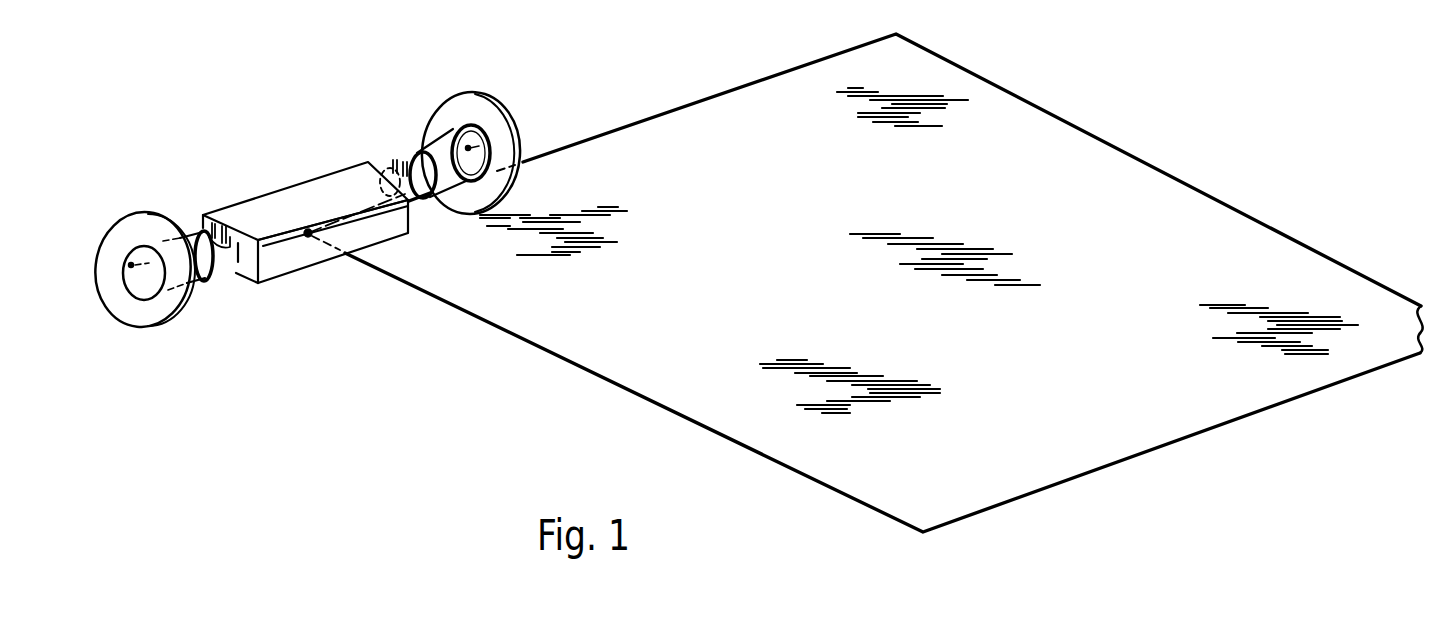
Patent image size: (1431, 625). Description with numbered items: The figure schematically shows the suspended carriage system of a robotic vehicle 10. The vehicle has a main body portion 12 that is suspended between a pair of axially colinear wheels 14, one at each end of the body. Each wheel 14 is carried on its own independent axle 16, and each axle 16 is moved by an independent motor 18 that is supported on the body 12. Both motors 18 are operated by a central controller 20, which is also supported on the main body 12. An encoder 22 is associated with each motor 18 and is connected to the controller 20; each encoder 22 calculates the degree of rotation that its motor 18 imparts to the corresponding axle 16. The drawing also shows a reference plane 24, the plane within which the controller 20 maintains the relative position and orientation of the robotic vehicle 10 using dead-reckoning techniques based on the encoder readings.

The robotic vehicle 10 is at (290, 357).
The main body portion 12 is at (297, 185).
The wheel 14 is at (168, 324).
The axle 16 is at (131, 264).
The motor 18 is at (205, 283).
The central controller 20 is at (314, 251).
The encoder 22 is at (233, 262).
The reference plane 24 is at (653, 403).